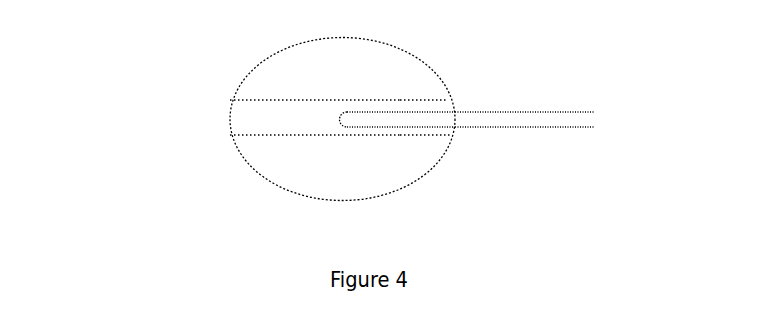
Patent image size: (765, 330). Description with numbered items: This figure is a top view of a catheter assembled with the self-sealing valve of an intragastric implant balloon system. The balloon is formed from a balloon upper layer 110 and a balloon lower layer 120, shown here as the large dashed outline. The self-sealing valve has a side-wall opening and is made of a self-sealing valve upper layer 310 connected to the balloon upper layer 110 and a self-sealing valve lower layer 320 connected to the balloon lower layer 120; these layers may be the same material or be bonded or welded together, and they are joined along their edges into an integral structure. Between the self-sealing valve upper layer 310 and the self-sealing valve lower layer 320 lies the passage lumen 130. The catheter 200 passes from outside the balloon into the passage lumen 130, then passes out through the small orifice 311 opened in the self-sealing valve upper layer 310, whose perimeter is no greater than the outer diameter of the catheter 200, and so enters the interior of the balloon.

The balloon upper layer 110 is at (286, 107).
The balloon lower layer 120 is at (276, 76).
The passage lumen 130 is at (457, 101).
The catheter 200 is at (580, 96).
The self-sealing valve upper layer 310 is at (234, 128).
The self-sealing valve lower layer 320 is at (237, 120).
The small orifice 311 is at (350, 134).